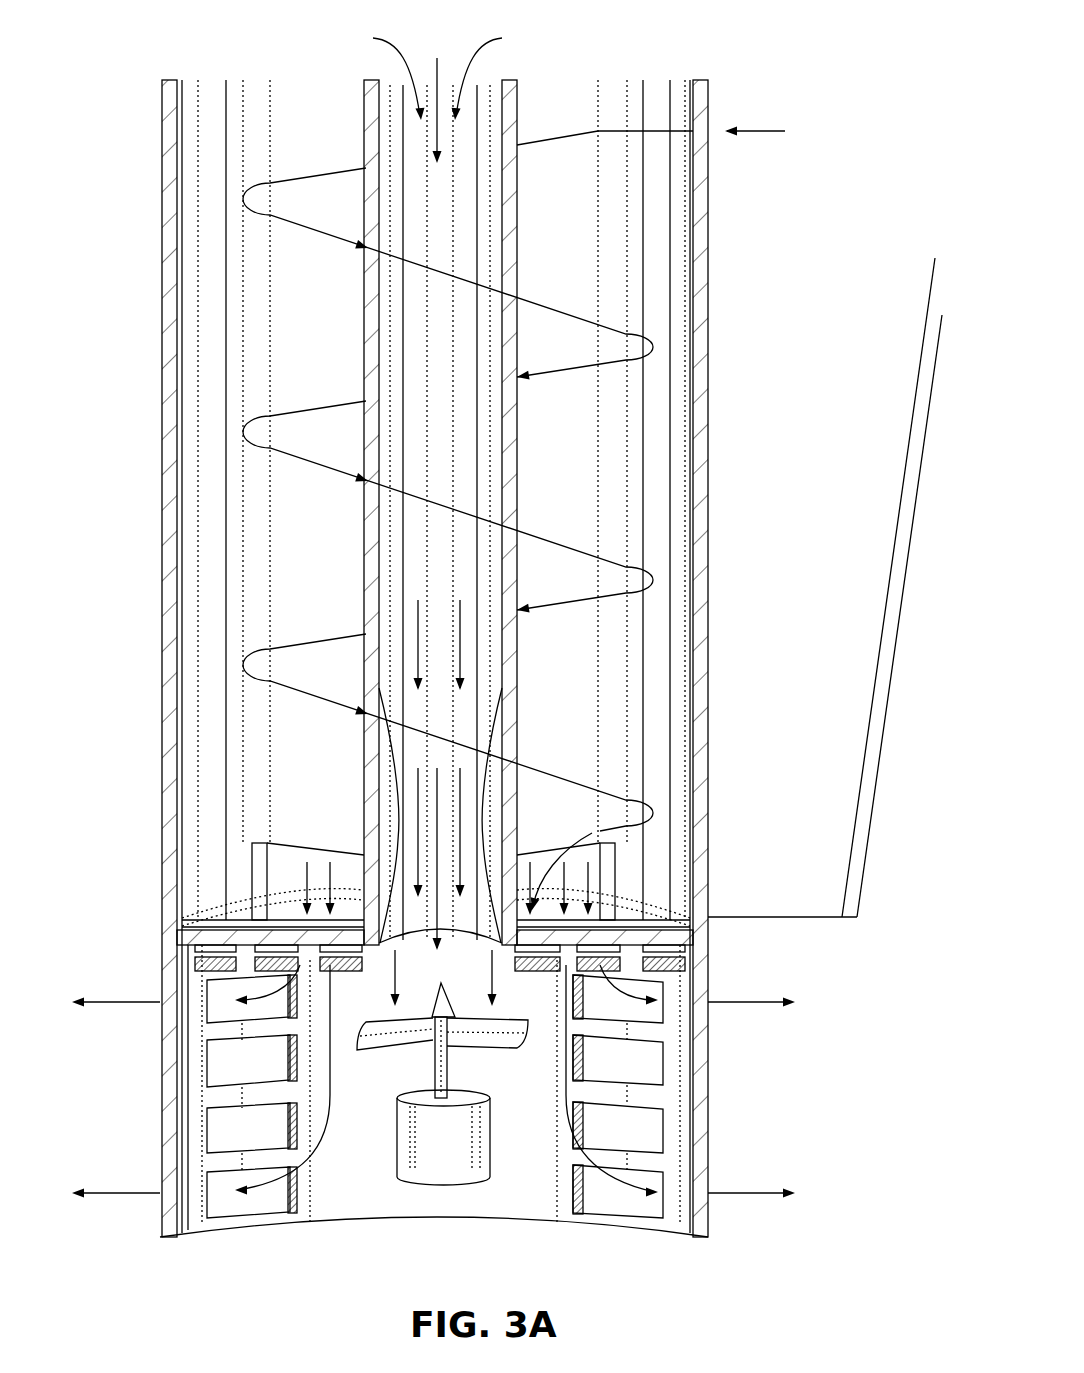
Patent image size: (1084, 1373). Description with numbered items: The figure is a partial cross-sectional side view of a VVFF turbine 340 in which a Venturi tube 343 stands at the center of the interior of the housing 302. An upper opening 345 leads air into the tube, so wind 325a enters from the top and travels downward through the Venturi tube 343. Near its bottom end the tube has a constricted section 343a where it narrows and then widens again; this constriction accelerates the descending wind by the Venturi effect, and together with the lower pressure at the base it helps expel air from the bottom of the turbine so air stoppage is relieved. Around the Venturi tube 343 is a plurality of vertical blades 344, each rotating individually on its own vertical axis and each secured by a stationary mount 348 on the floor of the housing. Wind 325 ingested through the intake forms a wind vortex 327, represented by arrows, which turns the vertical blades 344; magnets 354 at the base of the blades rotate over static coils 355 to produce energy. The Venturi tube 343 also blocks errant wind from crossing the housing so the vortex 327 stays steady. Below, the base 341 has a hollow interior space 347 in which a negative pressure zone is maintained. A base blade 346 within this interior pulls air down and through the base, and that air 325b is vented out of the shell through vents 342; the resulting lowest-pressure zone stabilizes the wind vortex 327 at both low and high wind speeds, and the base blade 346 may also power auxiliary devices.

The VVFF turbine 340 is at (128, 185).
The housing 302 is at (175, 316).
The Venturi tube 343 is at (366, 81).
The constricted section 343a is at (393, 838).
The wind 325a is at (470, 57).
The upper opening 345 is at (492, 69).
The wind 325 is at (765, 133).
The wind vortex 327 is at (574, 370).
The vertical blade 344 is at (598, 275).
The stationary mount 348 is at (252, 892).
The magnet 354 is at (195, 930).
The coil 355 is at (195, 962).
The vent 342 is at (652, 1142).
The base blade 346 is at (447, 1052).
The base hollow interior space 347 is at (375, 1204).
The air 325b is at (735, 1185).
The base 341 is at (712, 1218).